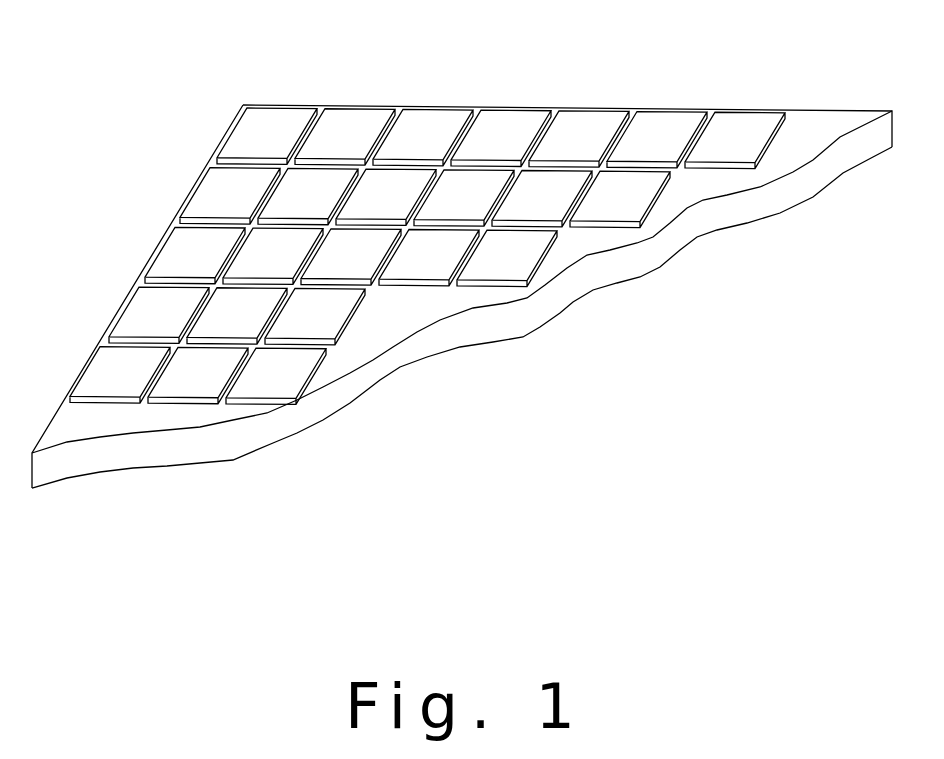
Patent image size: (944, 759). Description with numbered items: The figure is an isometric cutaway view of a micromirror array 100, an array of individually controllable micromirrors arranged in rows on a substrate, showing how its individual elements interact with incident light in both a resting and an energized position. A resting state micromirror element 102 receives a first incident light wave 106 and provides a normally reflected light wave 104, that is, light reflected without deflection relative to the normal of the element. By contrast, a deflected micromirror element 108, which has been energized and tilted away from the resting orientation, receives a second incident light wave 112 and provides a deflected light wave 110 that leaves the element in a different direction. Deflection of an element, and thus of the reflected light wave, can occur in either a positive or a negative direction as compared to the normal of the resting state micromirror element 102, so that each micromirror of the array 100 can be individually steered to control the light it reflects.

The micromirror array 100 is at (163, 505).
The resting state micromirror element 102 is at (323, 320).
The normally reflected light wave 104 is at (372, 278).
The first incident light wave 106 is at (372, 278).
The deflected micromirror element 108 is at (413, 267).
The deflected light wave 110 is at (277, 210).
The second incident light wave 112 is at (350, 182).